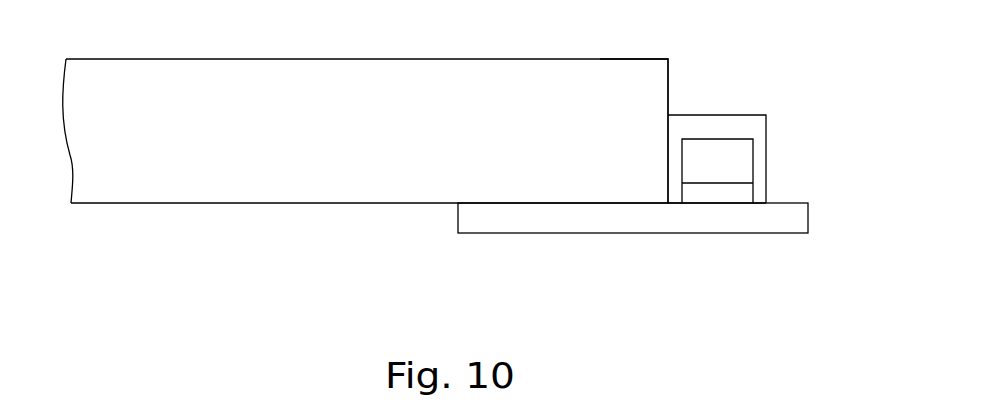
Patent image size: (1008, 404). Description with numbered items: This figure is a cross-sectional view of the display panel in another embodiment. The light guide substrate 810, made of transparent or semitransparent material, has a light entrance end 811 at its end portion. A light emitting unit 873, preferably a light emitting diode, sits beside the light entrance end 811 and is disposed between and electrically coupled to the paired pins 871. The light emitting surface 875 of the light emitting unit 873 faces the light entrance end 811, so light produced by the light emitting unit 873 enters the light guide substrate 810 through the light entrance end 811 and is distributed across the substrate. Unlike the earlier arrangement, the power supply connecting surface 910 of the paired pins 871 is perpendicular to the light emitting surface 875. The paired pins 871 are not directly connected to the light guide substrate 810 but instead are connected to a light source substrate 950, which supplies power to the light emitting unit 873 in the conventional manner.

The light guide substrate 810 is at (178, 185).
The light entrance end 811 is at (656, 73).
The light emitting surface 875 is at (665, 167).
The light emitting unit 873 is at (692, 125).
The paired pins 871 is at (745, 155).
The light source substrate 950 is at (595, 220).
The power supply connecting surface 910 is at (722, 204).